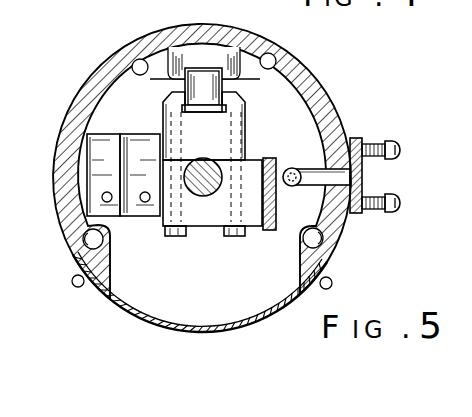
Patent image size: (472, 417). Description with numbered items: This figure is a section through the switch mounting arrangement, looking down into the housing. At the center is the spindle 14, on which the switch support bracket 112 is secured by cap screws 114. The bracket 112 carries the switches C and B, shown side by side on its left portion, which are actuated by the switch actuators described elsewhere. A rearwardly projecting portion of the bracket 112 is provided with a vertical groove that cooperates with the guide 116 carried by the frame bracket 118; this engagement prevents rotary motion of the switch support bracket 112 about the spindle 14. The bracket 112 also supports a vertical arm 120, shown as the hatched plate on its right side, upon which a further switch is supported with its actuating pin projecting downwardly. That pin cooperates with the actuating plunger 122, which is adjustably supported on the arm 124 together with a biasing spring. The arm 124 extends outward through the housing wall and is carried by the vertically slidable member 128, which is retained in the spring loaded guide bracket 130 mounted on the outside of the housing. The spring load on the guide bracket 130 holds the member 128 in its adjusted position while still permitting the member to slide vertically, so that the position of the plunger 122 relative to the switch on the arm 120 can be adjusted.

The spindle 14 is at (203, 163).
The bracket 112 is at (208, 212).
The cap screws 114 is at (175, 237).
The guide 116 is at (190, 55).
The frame bracket 118 is at (200, 88).
The vertical arm 120 is at (273, 160).
The actuating plunger 122 is at (290, 186).
The arm 124 is at (317, 170).
The vertically slidable member 128 is at (363, 177).
The spring loaded guide bracket 130 is at (352, 137).
The switch B is at (140, 134).
The switch C is at (106, 134).